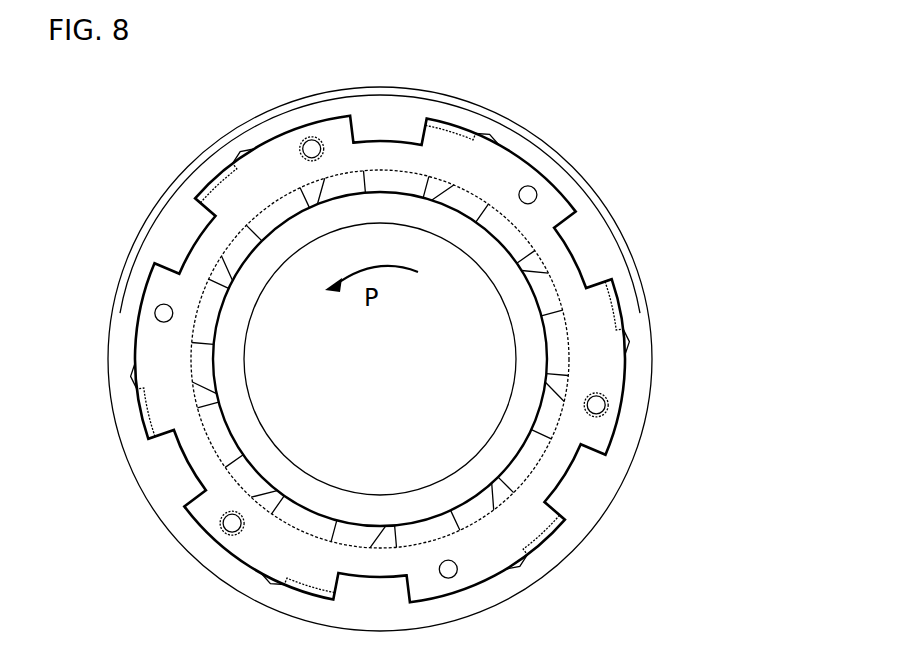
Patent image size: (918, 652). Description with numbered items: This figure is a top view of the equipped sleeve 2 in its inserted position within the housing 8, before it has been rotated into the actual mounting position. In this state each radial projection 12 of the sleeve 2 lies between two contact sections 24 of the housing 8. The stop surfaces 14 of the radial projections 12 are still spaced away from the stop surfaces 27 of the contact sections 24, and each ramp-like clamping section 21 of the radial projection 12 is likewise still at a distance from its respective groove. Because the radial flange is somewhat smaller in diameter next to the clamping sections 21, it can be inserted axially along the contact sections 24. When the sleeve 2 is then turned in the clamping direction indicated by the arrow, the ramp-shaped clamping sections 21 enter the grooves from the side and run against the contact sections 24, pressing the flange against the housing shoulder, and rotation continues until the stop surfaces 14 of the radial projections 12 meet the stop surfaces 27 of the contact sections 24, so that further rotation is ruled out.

The sleeve 2 is at (523, 222).
The housing 8 is at (637, 370).
The radial projection 12 is at (500, 160).
The stop surface 14 is at (472, 135).
The clamping section 21 is at (445, 140).
The contact section 24 is at (606, 252).
The stop surface 27 is at (420, 125).